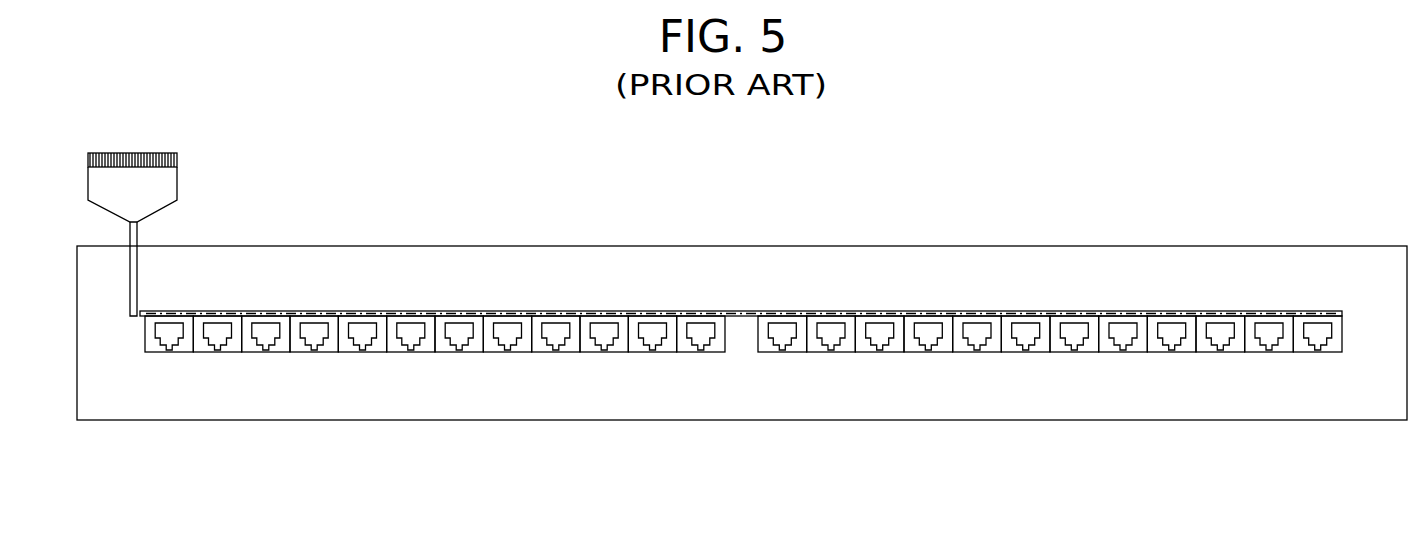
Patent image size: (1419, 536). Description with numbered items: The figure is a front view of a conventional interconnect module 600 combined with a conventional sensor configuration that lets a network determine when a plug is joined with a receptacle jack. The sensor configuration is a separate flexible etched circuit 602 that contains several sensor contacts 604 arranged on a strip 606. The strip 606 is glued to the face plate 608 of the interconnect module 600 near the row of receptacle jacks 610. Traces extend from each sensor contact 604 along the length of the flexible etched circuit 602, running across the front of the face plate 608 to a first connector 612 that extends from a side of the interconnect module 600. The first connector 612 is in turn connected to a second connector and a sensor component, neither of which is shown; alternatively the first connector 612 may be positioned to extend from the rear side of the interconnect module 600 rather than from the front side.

The interconnect module 600 is at (798, 437).
The flexible etched circuit 602 is at (138, 289).
The sensor contacts 604 is at (462, 312).
The strip 606 is at (536, 311).
The face plate 608 is at (358, 402).
The receptacle jacks 610 is at (571, 352).
The first connector 612 is at (133, 153).